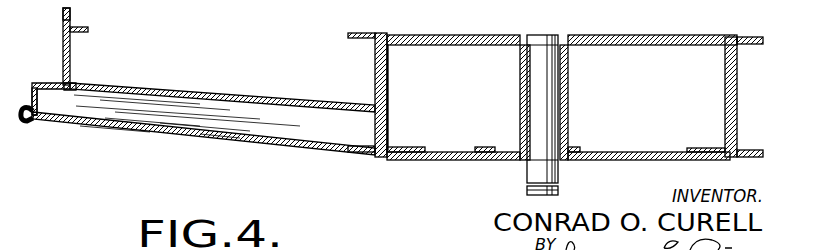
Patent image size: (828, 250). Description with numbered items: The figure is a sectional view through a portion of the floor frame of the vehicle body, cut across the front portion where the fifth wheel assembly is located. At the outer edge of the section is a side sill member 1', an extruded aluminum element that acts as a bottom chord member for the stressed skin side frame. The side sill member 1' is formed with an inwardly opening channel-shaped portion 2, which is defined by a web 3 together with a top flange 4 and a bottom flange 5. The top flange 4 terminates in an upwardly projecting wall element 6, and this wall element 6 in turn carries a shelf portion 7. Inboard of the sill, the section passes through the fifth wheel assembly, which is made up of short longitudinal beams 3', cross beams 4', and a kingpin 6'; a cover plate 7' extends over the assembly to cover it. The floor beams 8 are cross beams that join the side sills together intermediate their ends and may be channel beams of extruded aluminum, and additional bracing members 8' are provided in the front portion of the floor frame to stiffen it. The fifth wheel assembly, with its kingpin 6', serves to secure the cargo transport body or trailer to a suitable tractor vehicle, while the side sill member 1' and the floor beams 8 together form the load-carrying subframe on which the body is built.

The side sill member 1' is at (84, 46).
The channel-shaped portion 2 is at (68, 92).
The web 3 is at (51, 99).
The top flange 4 is at (384, 97).
The bottom flange 5 is at (69, 131).
The wall element 6 is at (51, 22).
The shelf portion 7 is at (89, 16).
The floor beam 8 is at (558, 95).
The bracing member 8' is at (222, 102).
The cross beam 4' is at (408, 97).
The cover plate 7' is at (453, 22).
The kingpin 6' is at (544, 99).
The short longitudinal beam 3' is at (652, 24).